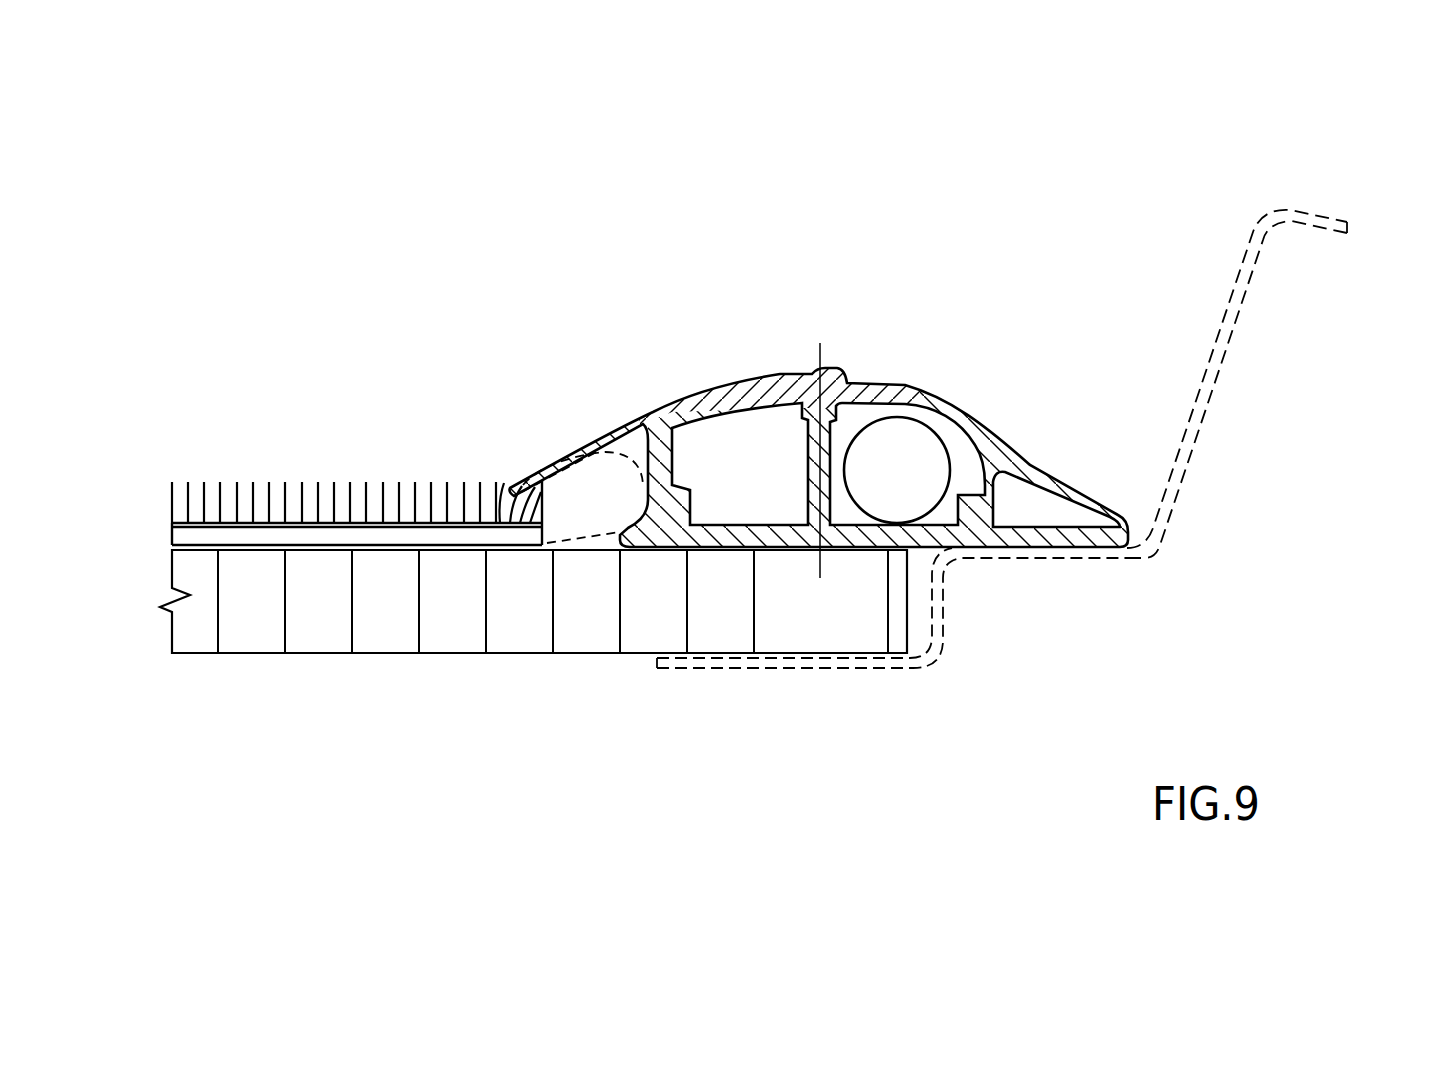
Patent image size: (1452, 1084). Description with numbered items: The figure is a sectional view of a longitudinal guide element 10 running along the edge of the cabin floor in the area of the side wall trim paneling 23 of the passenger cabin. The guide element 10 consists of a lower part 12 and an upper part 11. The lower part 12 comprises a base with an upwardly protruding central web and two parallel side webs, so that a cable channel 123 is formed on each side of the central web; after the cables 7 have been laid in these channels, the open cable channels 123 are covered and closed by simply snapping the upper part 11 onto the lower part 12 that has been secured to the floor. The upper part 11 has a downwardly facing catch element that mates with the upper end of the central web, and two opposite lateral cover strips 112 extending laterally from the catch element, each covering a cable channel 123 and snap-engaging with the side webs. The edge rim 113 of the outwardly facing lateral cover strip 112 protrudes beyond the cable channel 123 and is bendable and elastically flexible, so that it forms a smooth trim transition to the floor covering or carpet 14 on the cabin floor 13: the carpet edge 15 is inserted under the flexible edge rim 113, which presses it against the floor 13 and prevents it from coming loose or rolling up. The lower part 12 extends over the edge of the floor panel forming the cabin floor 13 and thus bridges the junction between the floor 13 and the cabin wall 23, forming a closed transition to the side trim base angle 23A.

The longitudinal guide element 10 is at (628, 341).
The upper part 11 is at (747, 380).
The lower part 12 is at (972, 555).
The cabin floor 13 is at (400, 653).
The floor covering 14 is at (247, 498).
The carpet edge 15 is at (610, 518).
The cables 7 is at (922, 435).
The lateral cover strip 112 is at (795, 387).
The edge rim 113 is at (553, 460).
The cable channel 123 is at (768, 484).
The side wall trim paneling 23 is at (1333, 497).
The side trim base angle 23A is at (1237, 307).